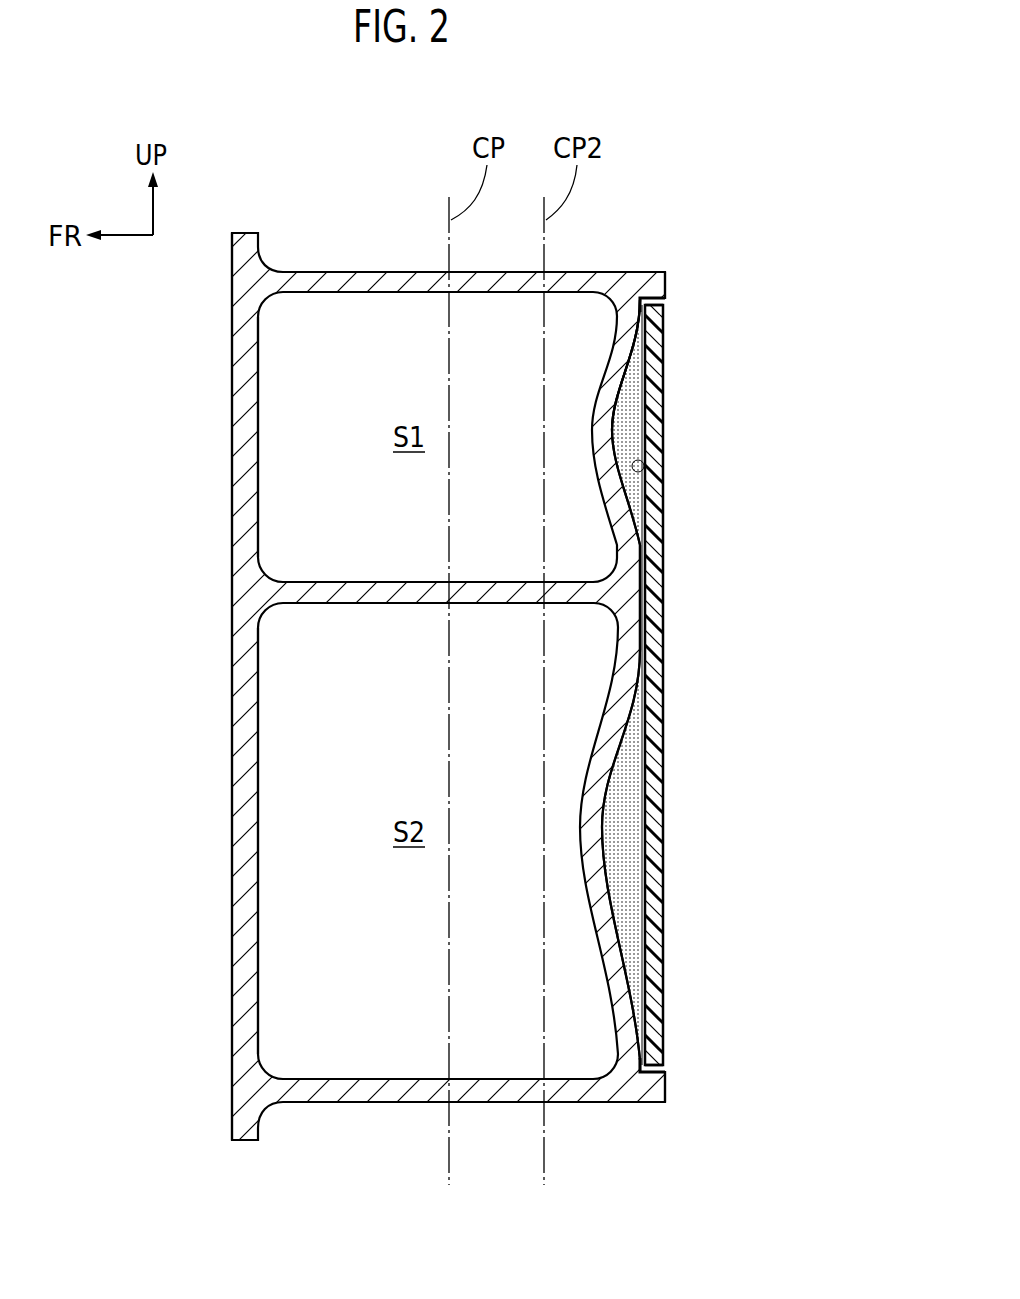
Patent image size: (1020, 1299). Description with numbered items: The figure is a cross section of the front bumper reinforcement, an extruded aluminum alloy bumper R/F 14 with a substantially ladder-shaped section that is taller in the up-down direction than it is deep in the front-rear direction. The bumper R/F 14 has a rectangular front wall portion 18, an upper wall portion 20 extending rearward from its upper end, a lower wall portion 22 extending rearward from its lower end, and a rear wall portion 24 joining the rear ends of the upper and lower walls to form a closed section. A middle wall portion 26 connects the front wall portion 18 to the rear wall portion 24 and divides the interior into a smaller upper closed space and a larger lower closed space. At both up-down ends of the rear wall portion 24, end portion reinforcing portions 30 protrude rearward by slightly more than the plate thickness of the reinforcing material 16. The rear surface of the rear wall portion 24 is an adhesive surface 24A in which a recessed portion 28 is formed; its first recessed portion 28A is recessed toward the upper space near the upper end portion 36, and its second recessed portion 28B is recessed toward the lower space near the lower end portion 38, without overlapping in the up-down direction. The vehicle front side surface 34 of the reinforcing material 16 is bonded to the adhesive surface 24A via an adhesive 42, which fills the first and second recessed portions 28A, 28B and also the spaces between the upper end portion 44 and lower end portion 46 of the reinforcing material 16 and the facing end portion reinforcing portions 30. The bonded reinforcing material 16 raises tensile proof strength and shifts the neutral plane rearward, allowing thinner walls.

The bumper reinforcement 14 is at (219, 594).
The reinforcing material 16 is at (666, 451).
The front wall portion 18 is at (243, 707).
The upper wall portion 20 is at (368, 280).
The lower wall portion 22 is at (362, 1097).
The rear wall portion 24 is at (627, 560).
The adhesive surface 24A is at (645, 585).
The middle wall portion 26 is at (385, 583).
The recessed portion 28 is at (712, 680).
The first recessed portion 28A is at (615, 427).
The second recessed portion 28B is at (606, 847).
The end portion reinforcing portion 30 is at (658, 286).
The vehicle front side surface 34 is at (645, 483).
The end portion 36 is at (650, 313).
The end portion 38 is at (655, 1050).
The adhesive 42 is at (634, 382).
The upper end portion 44 is at (650, 302).
The lower end portion 46 is at (652, 1095).